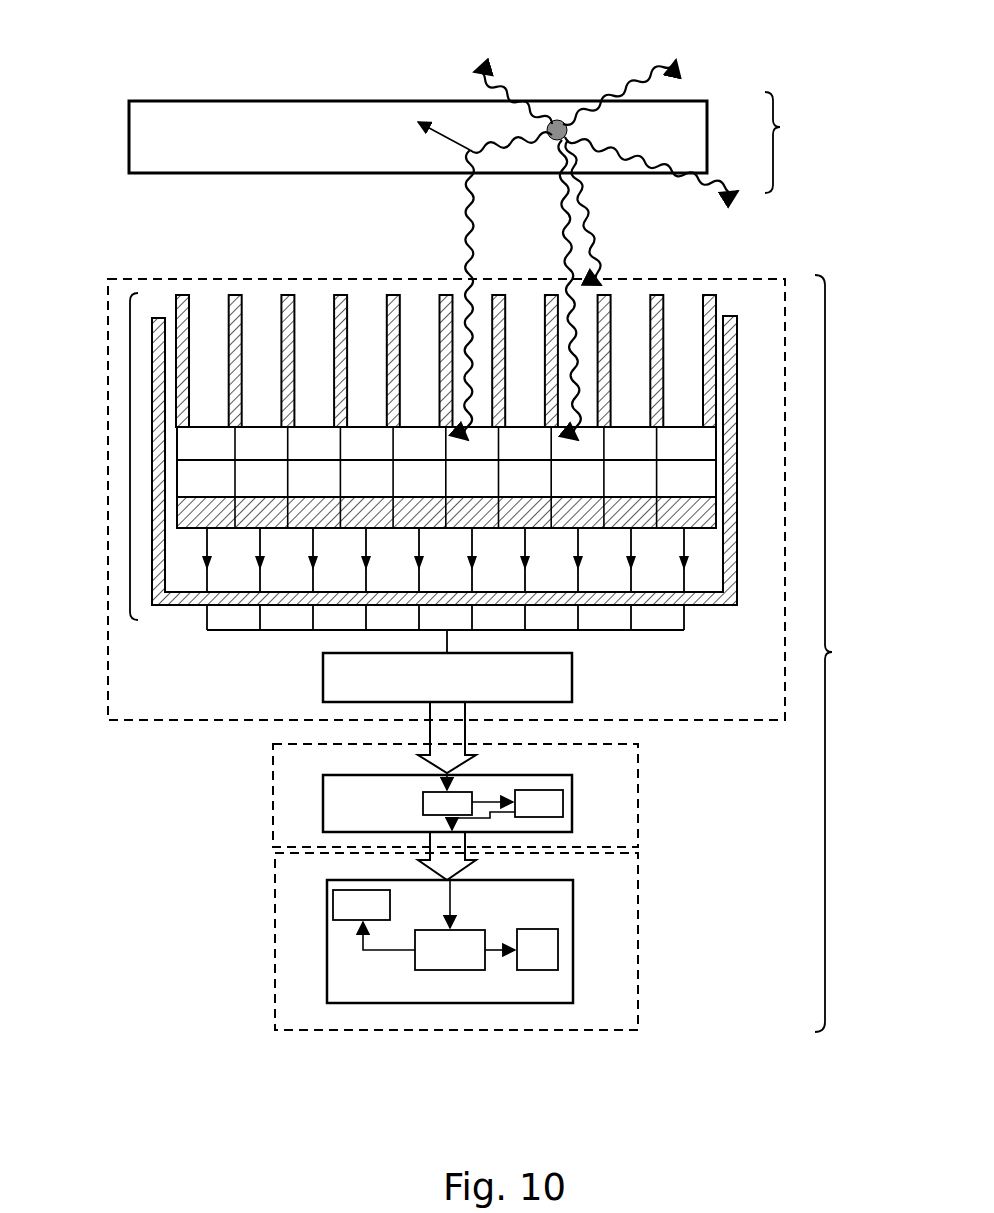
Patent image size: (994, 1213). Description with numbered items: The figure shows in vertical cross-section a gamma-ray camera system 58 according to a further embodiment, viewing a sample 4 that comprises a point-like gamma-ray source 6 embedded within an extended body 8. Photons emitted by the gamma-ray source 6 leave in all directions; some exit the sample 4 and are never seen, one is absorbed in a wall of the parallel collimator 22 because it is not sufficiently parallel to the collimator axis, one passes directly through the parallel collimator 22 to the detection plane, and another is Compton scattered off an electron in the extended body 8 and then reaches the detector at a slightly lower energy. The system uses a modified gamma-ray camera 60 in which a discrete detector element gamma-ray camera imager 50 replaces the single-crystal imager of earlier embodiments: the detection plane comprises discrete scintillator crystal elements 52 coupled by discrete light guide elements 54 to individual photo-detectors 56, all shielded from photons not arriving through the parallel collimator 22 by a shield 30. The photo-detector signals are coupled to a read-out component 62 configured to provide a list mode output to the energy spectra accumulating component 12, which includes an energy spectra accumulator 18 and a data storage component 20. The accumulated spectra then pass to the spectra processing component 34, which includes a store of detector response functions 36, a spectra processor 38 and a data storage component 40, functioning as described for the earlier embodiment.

The sample 4 is at (780, 127).
The gamma-ray source 6 is at (567, 128).
The extended body 8 is at (688, 101).
The energy spectra accumulating component 12 is at (282, 840).
The energy spectra accumulator 18 is at (425, 800).
The data storage component 20 is at (550, 802).
The parallel collimator 22 is at (286, 295).
The shield 30 is at (705, 605).
The spectra processing component 34 is at (286, 1024).
The store of detector response functions 36 is at (340, 905).
The spectra processor 38 is at (455, 963).
The data storage component 40 is at (535, 963).
The discrete detector element gamma-ray camera imager 50 is at (130, 456).
The discrete scintillator crystal elements 52 is at (190, 443).
The discrete light guide elements 54 is at (192, 482).
The individual photo-detectors 56 is at (177, 513).
The gamma-ray camera system 58 is at (832, 652).
The modified gamma-ray camera 60 is at (144, 704).
The read-out component 62 is at (354, 696).